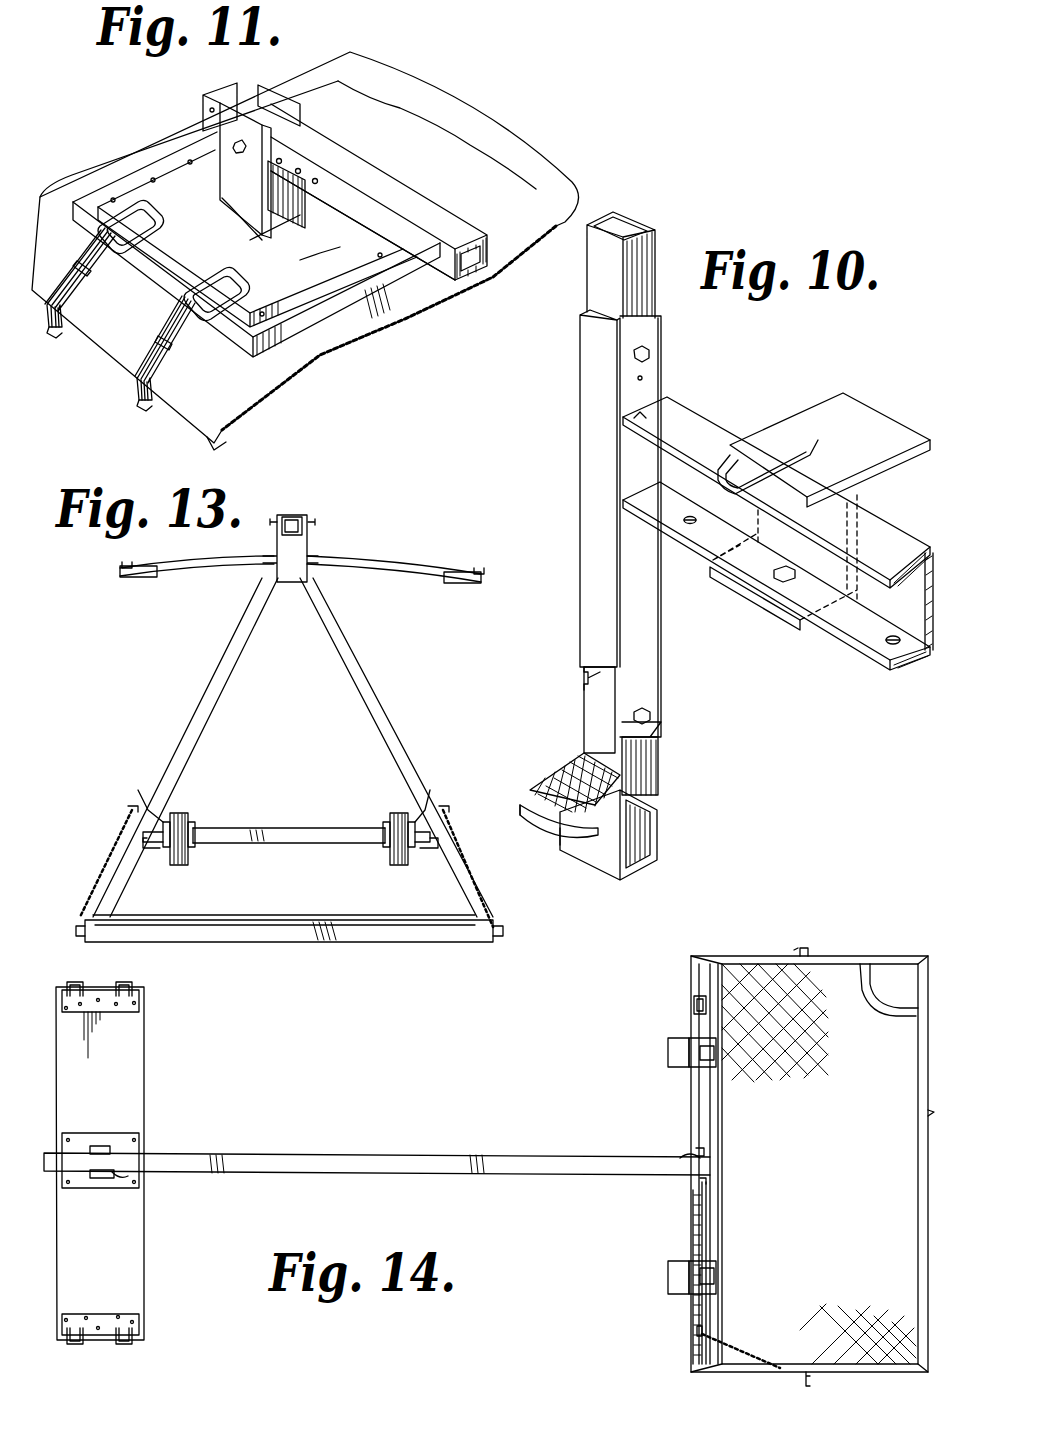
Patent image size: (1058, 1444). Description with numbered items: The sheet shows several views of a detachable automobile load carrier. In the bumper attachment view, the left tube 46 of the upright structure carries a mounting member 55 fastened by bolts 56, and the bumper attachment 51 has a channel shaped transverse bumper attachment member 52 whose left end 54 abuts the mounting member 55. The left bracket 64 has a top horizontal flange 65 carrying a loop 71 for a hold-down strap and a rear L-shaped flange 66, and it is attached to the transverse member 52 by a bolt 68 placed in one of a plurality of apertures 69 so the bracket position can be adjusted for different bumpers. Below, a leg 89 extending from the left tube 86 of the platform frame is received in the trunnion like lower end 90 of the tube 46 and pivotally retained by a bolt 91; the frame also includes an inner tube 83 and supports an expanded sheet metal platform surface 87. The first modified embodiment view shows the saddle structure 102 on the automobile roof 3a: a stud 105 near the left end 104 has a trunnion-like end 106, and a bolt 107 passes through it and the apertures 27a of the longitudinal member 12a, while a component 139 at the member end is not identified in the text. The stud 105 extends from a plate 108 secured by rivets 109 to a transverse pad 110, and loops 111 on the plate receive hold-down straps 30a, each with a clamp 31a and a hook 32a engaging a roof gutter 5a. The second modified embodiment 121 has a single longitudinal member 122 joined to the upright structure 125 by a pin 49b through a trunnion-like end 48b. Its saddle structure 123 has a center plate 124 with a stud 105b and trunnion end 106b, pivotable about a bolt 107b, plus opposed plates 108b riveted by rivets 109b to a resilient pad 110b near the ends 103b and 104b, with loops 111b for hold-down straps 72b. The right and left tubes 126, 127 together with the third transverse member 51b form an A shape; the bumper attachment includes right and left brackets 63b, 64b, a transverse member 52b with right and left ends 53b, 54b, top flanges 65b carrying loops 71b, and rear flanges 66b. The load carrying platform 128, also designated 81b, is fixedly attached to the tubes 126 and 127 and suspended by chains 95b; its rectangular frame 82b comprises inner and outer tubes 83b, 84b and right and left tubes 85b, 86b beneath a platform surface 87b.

In FIG. 11, the automobile roof 3a is at (462, 118).
In FIG. 11, the automobile roof gutter 5a is at (205, 445).
In FIG. 11, the longitudinal member 12a is at (402, 192).
In FIG. 11, the longitudinal member apertures 27a is at (312, 185).
In FIG. 11, the hold-down strap 30a is at (190, 370).
In FIG. 11, the clamp 31a is at (178, 348).
In FIG. 11, the hook 32a is at (148, 404).
In FIG. 11, the saddle structure 102 is at (75, 200).
In FIG. 11, the left end 104 is at (165, 282).
In FIG. 11, the stud 105 is at (225, 200).
In FIG. 11, the trunnion-like end 106 is at (275, 152).
In FIG. 11, the bolt 107 is at (234, 152).
In FIG. 11, the plate 108 is at (292, 258).
In FIG. 11, the rivets 109 is at (322, 262).
In FIG. 11, the pad 110 is at (408, 140).
In FIG. 11, the loops 111 is at (178, 270).
In FIG. 11, the bracket 139 is at (205, 86).
In FIG. 10, the left tube 46 is at (656, 232).
In FIG. 10, the bumper attachment 51 is at (890, 672).
In FIG. 10, the transverse bumper attachment member 52 is at (725, 425).
In FIG. 10, the left end 54 is at (652, 426).
In FIG. 10, the mounting member 55 is at (580, 404).
In FIG. 10, the bolts 56 is at (650, 354).
In FIG. 10, the left bracket 64 is at (843, 392).
In FIG. 10, the top horizontal flange 65 is at (825, 436).
In FIG. 10, the rear L-shaped flange 66 is at (866, 520).
In FIG. 10, the bolt 68 is at (787, 566).
In FIG. 10, the apertures 69 is at (893, 636).
In FIG. 10, the loop 71 is at (740, 500).
In FIG. 10, the inner tube 83 is at (658, 850).
In FIG. 10, the left tube 86 is at (530, 796).
In FIG. 10, the platform surface 87 is at (594, 843).
In FIG. 10, the leg 89 is at (586, 742).
In FIG. 10, the trunnion like lower end 90 is at (590, 700).
In FIG. 10, the bolt 91 is at (650, 716).
In FIG. 13, the trunnion-like end 48b is at (300, 517).
In FIG. 14, the trunnion-like end 48b is at (676, 1170).
In FIG. 13, the pin 49b is at (268, 512).
In FIG. 14, the pin 49b is at (704, 1150).
In FIG. 13, the bumper attachment 51b is at (284, 826).
In FIG. 14, the bumper attachment 51b is at (692, 1124).
In FIG. 13, the transverse bumper attachment member 52b is at (306, 834).
In FIG. 14, the transverse bumper attachment member 52b is at (688, 1022).
In FIG. 13, the right end 53b is at (440, 846).
In FIG. 13, the left end 54b is at (143, 844).
In FIG. 13, the right bracket 63b is at (415, 800).
In FIG. 14, the right bracket 63b is at (670, 1068).
In FIG. 13, the left bracket 64b is at (188, 812).
In FIG. 14, the left bracket 64b is at (668, 1262).
In FIG. 13, the top horizontal flange 65b is at (378, 820).
In FIG. 14, the top horizontal flange 65b is at (668, 1282).
In FIG. 13, the rear L-shaped flange 66b is at (383, 858).
In FIG. 13, the loop 71b is at (438, 816).
In FIG. 14, the loop 71b is at (716, 1276).
In FIG. 13, the hold-down straps 72b is at (400, 866).
In FIG. 14, the load carrying platform 81b is at (928, 1372).
In FIG. 13, the rectangular frame 82b is at (86, 942).
In FIG. 14, the rectangular frame 82b is at (928, 956).
In FIG. 14, the inner tube 83b is at (706, 1332).
In FIG. 13, the outer tube 84b is at (294, 943).
In FIG. 14, the outer tube 84b is at (926, 1112).
In FIG. 14, the right tube 85b is at (796, 948).
In FIG. 14, the left tube 86b is at (788, 1374).
In FIG. 13, the platform surface 87b is at (292, 917).
In FIG. 14, the platform surface 87b is at (820, 1164).
In FIG. 13, the chains 95b is at (496, 906).
In FIG. 14, the chains 95b is at (766, 1364).
In FIG. 13, the right end 103b is at (492, 606).
In FIG. 13, the left end 104b is at (122, 576).
In FIG. 14, the stud 105b is at (112, 1144).
In FIG. 14, the trunnion end 106b is at (116, 1176).
In FIG. 14, the bolt 107b is at (126, 1180).
In FIG. 13, the opposed plates 108b is at (430, 566).
In FIG. 14, the opposed plates 108b is at (140, 1324).
In FIG. 14, the rivets 109b is at (84, 1316).
In FIG. 13, the resilient pad 110b is at (238, 554).
In FIG. 14, the resilient pad 110b is at (130, 1090).
In FIG. 13, the loops 111b is at (480, 566).
In FIG. 14, the loops 111b is at (74, 1346).
In FIG. 13, the second modified embodiment of load carrier 121 is at (382, 502).
In FIG. 14, the second modified embodiment of load carrier 121 is at (828, 924).
In FIG. 13, the single longitudinal member 122 is at (292, 517).
In FIG. 14, the single longitudinal member 122 is at (378, 1152).
In FIG. 14, the saddle structure 123 is at (146, 992).
In FIG. 13, the center plate 124 is at (314, 562).
In FIG. 14, the center plate 124 is at (68, 1130).
In FIG. 13, the upright structure 125 is at (190, 684).
In FIG. 14, the upright structure 125 is at (706, 1230).
In FIG. 13, the right tube 126 is at (370, 670).
In FIG. 14, the right tube 126 is at (692, 1004).
In FIG. 13, the left tube 127 is at (175, 726).
In FIG. 14, the left tube 127 is at (702, 1208).
In FIG. 13, the load carrying platform 128 is at (500, 922).